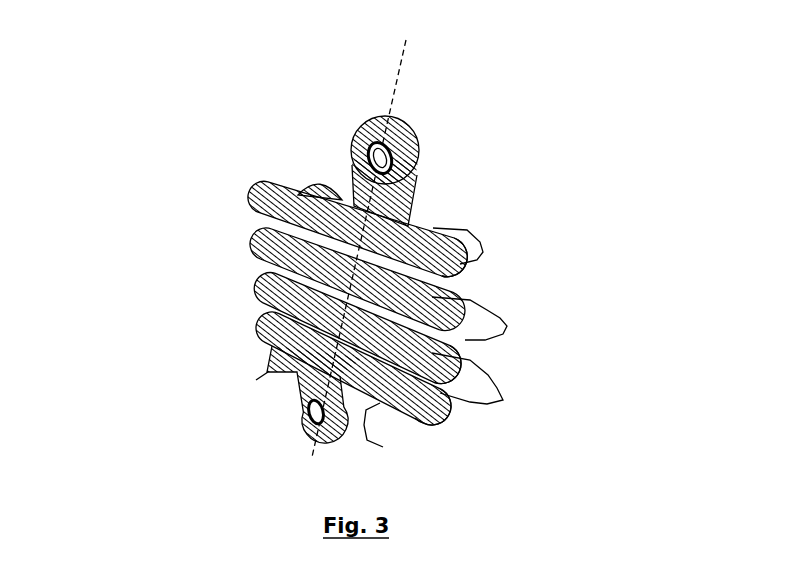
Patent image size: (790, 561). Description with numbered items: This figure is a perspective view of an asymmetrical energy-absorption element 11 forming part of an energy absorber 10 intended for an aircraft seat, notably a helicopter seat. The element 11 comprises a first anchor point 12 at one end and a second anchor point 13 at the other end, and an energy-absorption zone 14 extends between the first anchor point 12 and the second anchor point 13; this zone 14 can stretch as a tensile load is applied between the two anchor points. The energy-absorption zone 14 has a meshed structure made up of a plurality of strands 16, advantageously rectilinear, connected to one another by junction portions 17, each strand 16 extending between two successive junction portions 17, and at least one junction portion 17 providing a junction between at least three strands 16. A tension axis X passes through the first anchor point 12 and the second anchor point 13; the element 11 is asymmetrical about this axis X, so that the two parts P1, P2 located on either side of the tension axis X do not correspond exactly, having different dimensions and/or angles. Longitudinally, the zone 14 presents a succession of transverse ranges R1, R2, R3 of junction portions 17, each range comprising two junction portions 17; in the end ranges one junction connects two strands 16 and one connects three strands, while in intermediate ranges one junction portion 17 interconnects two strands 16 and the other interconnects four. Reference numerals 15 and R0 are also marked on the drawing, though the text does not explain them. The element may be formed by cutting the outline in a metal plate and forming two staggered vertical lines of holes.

The energy absorber 10 is at (153, 106).
The energy-absorption element 11 is at (336, 262).
The first anchor point 12 is at (420, 159).
The second anchor point 13 is at (300, 412).
The energy-absorption zone 14 is at (241, 170).
The first bend 15 is at (484, 240).
The strand 16 is at (507, 330).
The junction portion 17 is at (503, 401).
The bend radius R0 is at (466, 278).
The transverse range R1 is at (418, 432).
The transverse range R2 is at (436, 419).
The transverse range R3 is at (441, 396).
The tension axis X is at (402, 87).
The first part P1 is at (350, 94).
The second part P2 is at (438, 198).